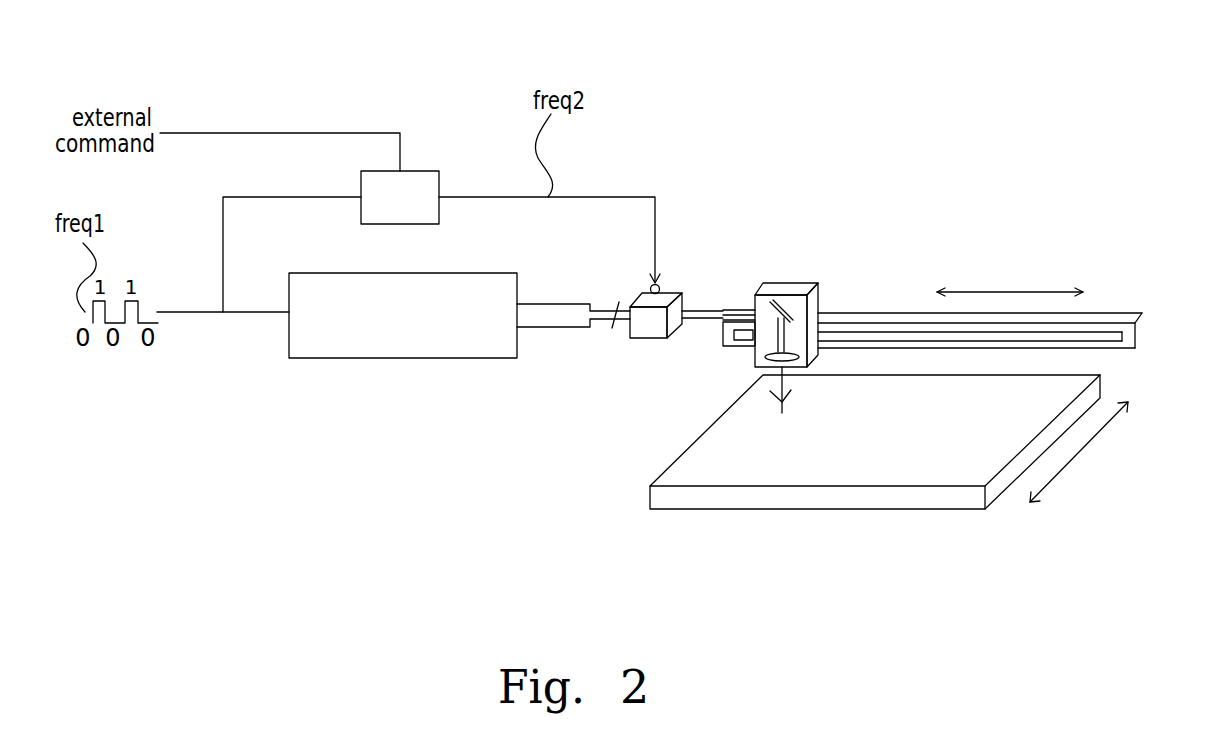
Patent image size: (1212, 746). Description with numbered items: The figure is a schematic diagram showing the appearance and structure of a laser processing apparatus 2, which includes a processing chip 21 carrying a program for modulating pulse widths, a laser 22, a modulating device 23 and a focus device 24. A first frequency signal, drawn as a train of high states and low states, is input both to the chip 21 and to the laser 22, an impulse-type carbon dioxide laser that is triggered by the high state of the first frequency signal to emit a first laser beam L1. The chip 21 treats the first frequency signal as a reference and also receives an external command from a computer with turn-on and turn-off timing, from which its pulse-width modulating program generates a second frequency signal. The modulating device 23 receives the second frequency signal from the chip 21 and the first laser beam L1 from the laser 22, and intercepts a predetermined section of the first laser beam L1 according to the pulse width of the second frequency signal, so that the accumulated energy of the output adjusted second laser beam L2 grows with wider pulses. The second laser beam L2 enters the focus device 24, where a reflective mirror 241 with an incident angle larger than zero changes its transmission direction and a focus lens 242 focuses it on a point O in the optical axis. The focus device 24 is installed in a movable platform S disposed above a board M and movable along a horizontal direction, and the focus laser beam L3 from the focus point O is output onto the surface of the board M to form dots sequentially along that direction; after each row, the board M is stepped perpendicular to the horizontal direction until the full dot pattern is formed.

The laser processing apparatus 2 is at (752, 64).
The processing chip 21 is at (420, 171).
The laser 22 is at (460, 358).
The modulating device 23 is at (672, 294).
The focus device 24 is at (797, 283).
The reflective mirror 241 is at (759, 332).
The focus lens 242 is at (800, 357).
The first laser beam L1 is at (601, 306).
The second laser beam L2 is at (745, 308).
The focus laser beam L3 is at (777, 412).
The movable platform S is at (1148, 318).
The board M is at (800, 496).
The focus point O is at (787, 383).